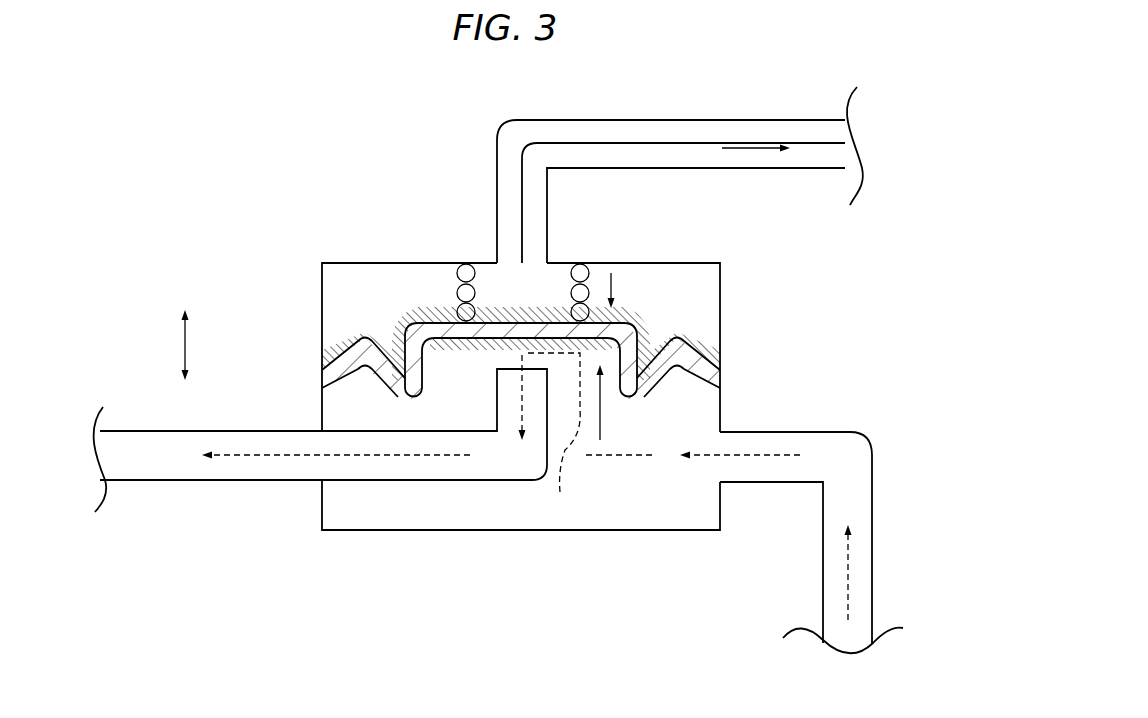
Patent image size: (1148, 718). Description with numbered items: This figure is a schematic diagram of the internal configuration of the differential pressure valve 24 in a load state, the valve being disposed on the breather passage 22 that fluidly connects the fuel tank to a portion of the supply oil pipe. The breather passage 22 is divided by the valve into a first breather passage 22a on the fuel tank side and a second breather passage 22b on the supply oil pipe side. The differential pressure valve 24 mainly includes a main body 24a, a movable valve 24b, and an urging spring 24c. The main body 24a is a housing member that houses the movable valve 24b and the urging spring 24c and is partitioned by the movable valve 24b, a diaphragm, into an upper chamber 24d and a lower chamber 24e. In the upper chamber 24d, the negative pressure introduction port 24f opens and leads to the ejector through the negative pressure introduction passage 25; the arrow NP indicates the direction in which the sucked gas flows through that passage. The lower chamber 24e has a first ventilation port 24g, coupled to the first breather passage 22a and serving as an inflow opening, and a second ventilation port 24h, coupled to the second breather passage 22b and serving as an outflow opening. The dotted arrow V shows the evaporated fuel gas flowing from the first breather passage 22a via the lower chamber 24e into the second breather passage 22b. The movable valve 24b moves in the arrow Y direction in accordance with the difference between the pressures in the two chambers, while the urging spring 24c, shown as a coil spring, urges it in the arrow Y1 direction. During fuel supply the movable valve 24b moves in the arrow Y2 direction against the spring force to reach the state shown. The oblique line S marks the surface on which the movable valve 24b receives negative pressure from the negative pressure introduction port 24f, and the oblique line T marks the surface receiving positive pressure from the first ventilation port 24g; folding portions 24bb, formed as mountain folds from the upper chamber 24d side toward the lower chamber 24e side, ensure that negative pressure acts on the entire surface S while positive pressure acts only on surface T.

The breather passage 22 is at (498, 518).
The first breather passage 22a is at (744, 542).
The second breather passage 22b is at (177, 481).
The differential pressure valve 24 is at (485, 379).
The main body 24a is at (333, 263).
The movable valve 24b is at (400, 318).
The folding portions 24bb is at (418, 410).
The urging spring 24c is at (457, 266).
The upper chamber 24d is at (690, 305).
The lower chamber 24e is at (520, 517).
The negative pressure introduction port 24f is at (550, 250).
The first ventilation port 24g is at (735, 428).
The second ventilation port 24h is at (340, 478).
The negative pressure introduction passage 25 is at (493, 155).
The arrow NP is at (722, 148).
The surface S is at (440, 316).
The surface T is at (458, 346).
The evaporated fuel gas V is at (268, 385).
The arrow Y direction Y is at (180, 345).
The arrow Y1 direction Y1 is at (612, 272).
The arrow Y2 direction Y2 is at (603, 440).